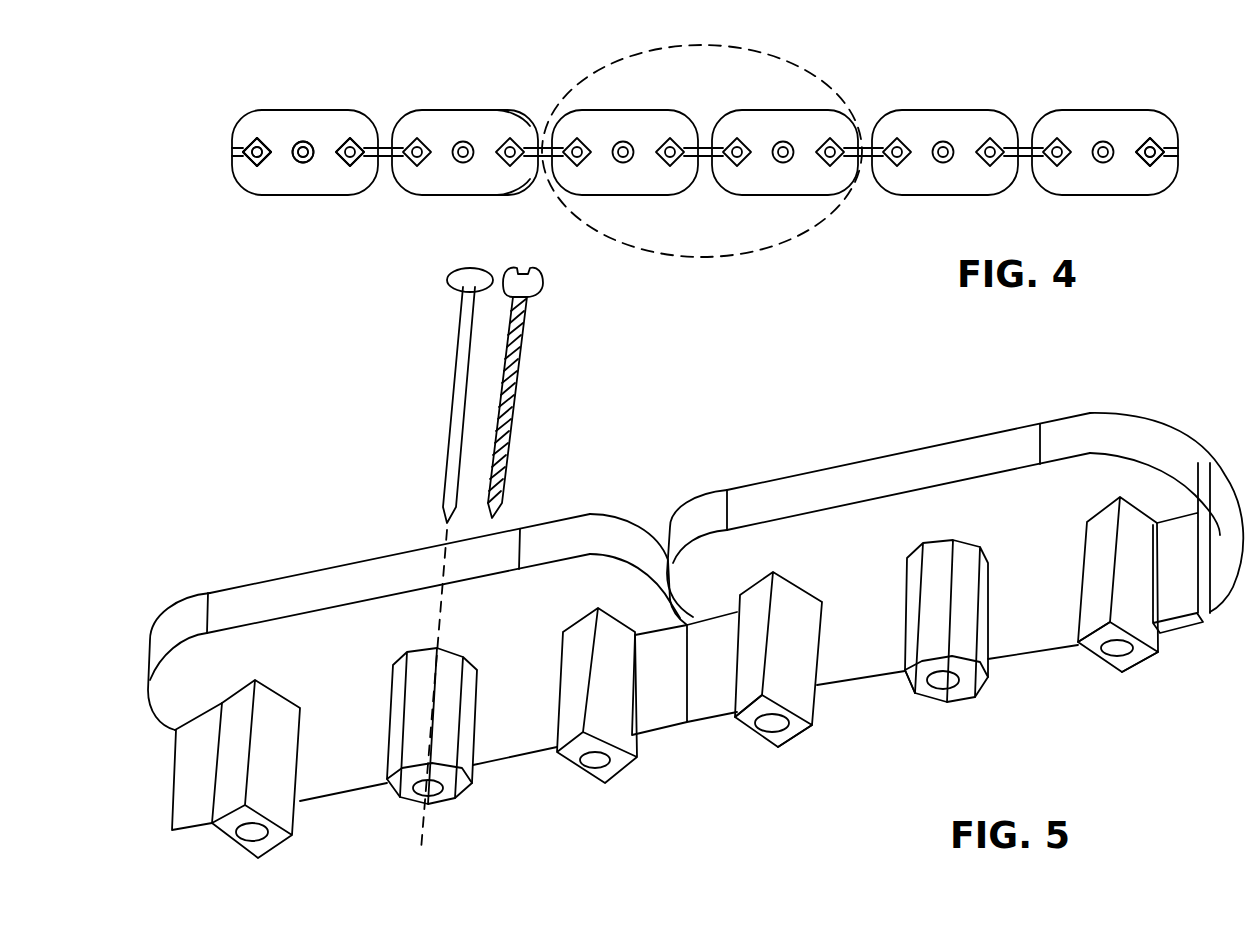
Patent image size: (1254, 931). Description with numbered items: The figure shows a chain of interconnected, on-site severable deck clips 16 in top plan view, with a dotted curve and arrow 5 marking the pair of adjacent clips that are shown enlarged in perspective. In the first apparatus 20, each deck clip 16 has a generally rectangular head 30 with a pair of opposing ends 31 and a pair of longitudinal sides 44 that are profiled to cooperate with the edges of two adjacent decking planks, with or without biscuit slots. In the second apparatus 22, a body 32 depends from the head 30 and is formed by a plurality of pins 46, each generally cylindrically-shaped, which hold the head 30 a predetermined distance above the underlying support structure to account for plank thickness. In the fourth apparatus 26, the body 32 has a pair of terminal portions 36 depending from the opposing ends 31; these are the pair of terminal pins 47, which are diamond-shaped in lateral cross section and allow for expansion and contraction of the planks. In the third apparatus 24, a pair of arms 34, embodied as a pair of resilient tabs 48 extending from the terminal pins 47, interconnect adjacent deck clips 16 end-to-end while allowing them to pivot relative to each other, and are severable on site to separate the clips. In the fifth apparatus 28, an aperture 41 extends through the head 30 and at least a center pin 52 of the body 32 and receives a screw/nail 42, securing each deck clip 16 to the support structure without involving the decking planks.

In FIG. 4, the arrow identifying enlarged area 5 is at (817, 223).
In FIG. 4, the deck clip 16 is at (447, 108).
In FIG. 5, the deck clip 16 is at (648, 571).
In FIG. 4, the first apparatus 20 is at (275, 176).
In FIG. 5, the first apparatus 20 is at (648, 571).
In FIG. 4, the head 30 is at (273, 195).
In FIG. 5, the head 30 is at (413, 545).
In FIG. 4, the second apparatus 22 is at (261, 94).
In FIG. 5, the second apparatus 22 is at (551, 723).
In FIG. 4, the body 32 is at (255, 137).
In FIG. 5, the body 32 is at (294, 808).
In FIG. 4, the third apparatus 24 is at (426, 198).
In FIG. 5, the third apparatus 24 is at (669, 576).
In FIG. 4, the pair of arms 34 is at (426, 198).
In FIG. 5, the pair of arms 34 is at (669, 576).
In FIG. 4, the pair of resilient tabs 48 is at (380, 158).
In FIG. 5, the pair of resilient tabs 48 is at (195, 752).
In FIG. 4, the fourth apparatus 26 is at (1140, 142).
In FIG. 5, the fourth apparatus 26 is at (215, 765).
In FIG. 4, the fifth apparatus 28 is at (307, 162).
In FIG. 5, the fifth apparatus 28 is at (737, 689).
In FIG. 5, the aperture 41 is at (440, 795).
In FIG. 4, the pair of opposing ends 31 is at (1042, 170).
In FIG. 5, the pair of opposing ends 31 is at (197, 673).
In FIG. 4, the pair of terminal portions 36 is at (246, 150).
In FIG. 5, the pair of terminal portions 36 is at (701, 685).
In FIG. 5, the screw/nail 42 is at (450, 407).
In FIG. 4, the pair of longitudinal sides 44 is at (495, 112).
In FIG. 5, the pair of longitudinal sides 44 is at (233, 607).
In FIG. 5, the plurality of pins 46 is at (748, 727).
In FIG. 5, the pair of terminal pins 47 is at (815, 707).
In FIG. 5, the center pin 52 is at (430, 793).